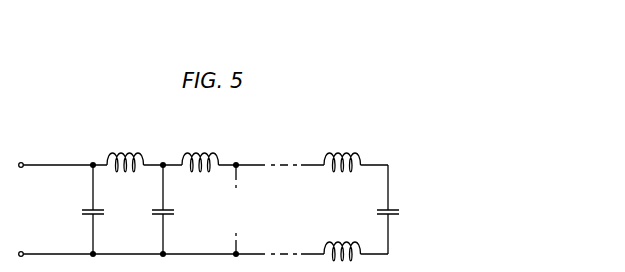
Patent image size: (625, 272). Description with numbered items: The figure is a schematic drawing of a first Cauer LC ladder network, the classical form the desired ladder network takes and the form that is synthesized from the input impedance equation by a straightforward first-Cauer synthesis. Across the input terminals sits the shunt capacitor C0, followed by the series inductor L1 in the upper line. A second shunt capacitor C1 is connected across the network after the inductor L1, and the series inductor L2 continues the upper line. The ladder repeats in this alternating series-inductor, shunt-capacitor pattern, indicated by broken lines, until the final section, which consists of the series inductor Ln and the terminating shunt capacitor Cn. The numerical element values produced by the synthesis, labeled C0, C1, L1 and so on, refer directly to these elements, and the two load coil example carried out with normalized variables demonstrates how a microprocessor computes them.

The first series inductor L1 is at (125, 150).
The second series inductor L2 is at (200, 150).
The nth series inductor Ln is at (342, 195).
The input shunt capacitor C0 is at (104, 209).
The first shunt capacitor C1 is at (174, 209).
The nth shunt capacitor Cn is at (400, 209).